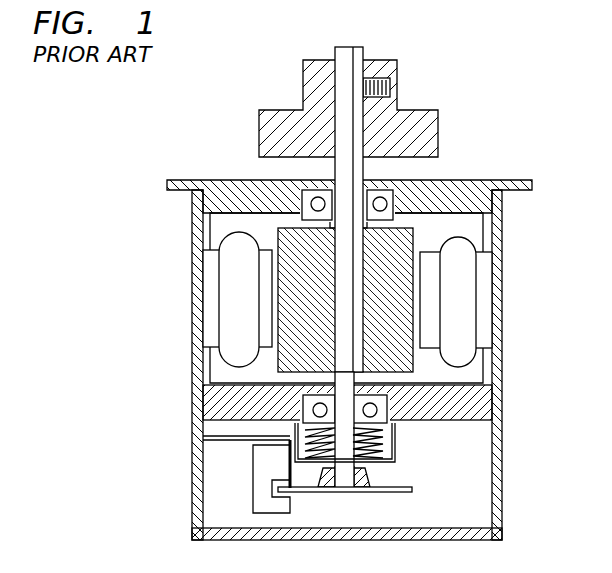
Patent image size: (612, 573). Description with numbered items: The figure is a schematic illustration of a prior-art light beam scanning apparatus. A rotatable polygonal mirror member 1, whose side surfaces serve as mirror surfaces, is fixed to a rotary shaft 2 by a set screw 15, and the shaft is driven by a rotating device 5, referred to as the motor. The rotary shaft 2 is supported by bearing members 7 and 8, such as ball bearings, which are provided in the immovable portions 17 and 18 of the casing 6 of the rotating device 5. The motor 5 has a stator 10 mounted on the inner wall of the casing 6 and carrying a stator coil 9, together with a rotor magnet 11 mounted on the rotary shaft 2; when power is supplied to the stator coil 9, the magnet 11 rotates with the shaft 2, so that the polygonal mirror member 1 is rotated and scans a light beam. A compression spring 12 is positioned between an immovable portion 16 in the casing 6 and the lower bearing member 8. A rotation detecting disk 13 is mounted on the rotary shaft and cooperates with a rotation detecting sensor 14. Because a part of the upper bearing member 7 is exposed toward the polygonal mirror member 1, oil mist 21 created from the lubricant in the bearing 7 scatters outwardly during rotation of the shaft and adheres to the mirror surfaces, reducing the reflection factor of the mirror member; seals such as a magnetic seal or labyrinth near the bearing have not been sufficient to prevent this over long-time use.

The rotatable polygonal mirror member 1 is at (284, 108).
The rotary shaft 2 is at (350, 47).
The rotating device 5 is at (516, 256).
The casing 6 is at (192, 300).
The bearing member 7 is at (323, 189).
The bearing member 8 is at (302, 410).
The stator coil 9 is at (463, 325).
The stator 10 is at (428, 285).
The rotor magnet 11 is at (424, 236).
The compression spring 12 is at (390, 440).
The rotation detecting disk 13 is at (395, 492).
The rotation detecting sensor 14 is at (282, 505).
The set screw 15 is at (391, 87).
The immovable portion 16 is at (397, 462).
The immovable portion 17 is at (497, 181).
The immovable portion 18 is at (462, 421).
The oil mist 21 is at (372, 192).